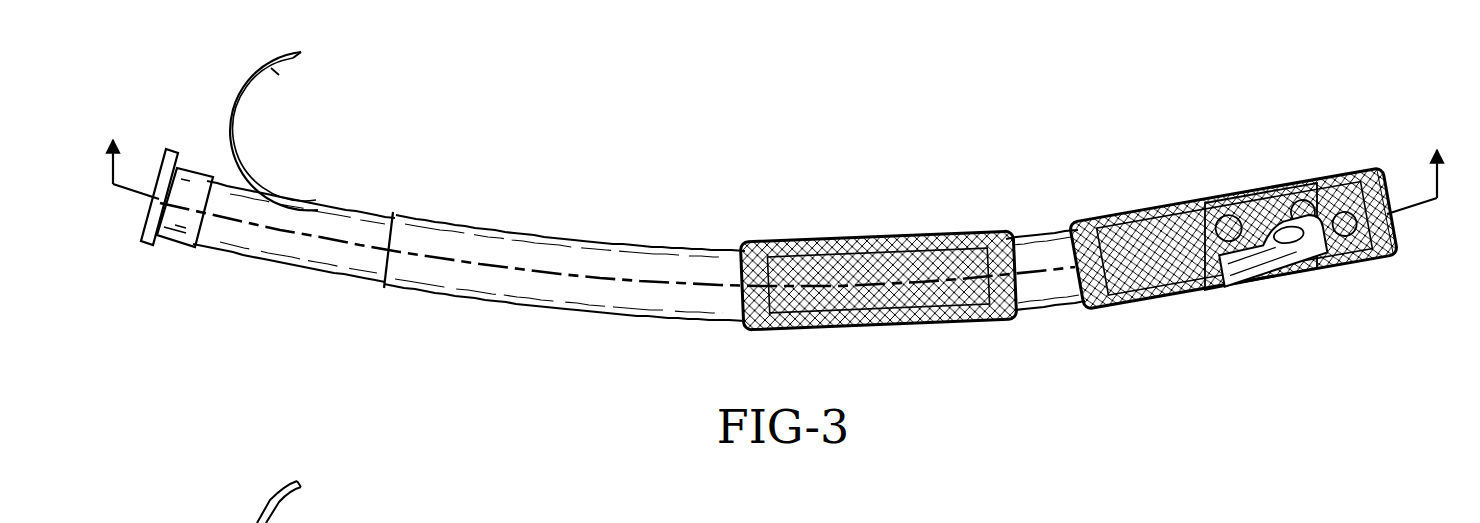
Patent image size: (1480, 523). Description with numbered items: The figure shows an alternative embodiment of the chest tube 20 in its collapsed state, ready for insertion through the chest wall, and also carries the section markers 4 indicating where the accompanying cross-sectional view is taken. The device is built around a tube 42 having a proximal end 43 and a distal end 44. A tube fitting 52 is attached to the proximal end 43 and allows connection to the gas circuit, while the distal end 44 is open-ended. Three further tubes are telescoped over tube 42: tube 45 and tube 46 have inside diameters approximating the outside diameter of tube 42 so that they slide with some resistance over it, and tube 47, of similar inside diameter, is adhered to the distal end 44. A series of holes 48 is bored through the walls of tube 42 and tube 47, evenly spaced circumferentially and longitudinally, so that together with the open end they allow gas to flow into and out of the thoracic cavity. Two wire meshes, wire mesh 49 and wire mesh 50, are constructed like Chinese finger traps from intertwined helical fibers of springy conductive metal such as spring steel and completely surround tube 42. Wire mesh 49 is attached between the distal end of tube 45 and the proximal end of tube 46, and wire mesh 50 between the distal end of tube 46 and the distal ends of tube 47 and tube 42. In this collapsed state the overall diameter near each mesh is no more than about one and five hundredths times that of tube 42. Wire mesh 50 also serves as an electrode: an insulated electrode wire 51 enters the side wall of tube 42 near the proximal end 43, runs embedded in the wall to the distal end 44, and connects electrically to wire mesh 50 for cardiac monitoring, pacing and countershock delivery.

The chest tube 20 is at (1380, 336).
The tube 42 is at (338, 216).
The proximal end 43 is at (180, 128).
The distal end 44 is at (1390, 168).
The tube 45 is at (565, 240).
The tube 46 is at (1044, 238).
The tube 47 is at (1224, 266).
The series of holes 48 is at (1223, 293).
The wire mesh 49 is at (1011, 230).
The wire mesh 50 is at (1073, 227).
The electrode wire 51 is at (295, 62).
The tube fitting 52 is at (150, 249).
The section line 4- 4 is at (774, 159).